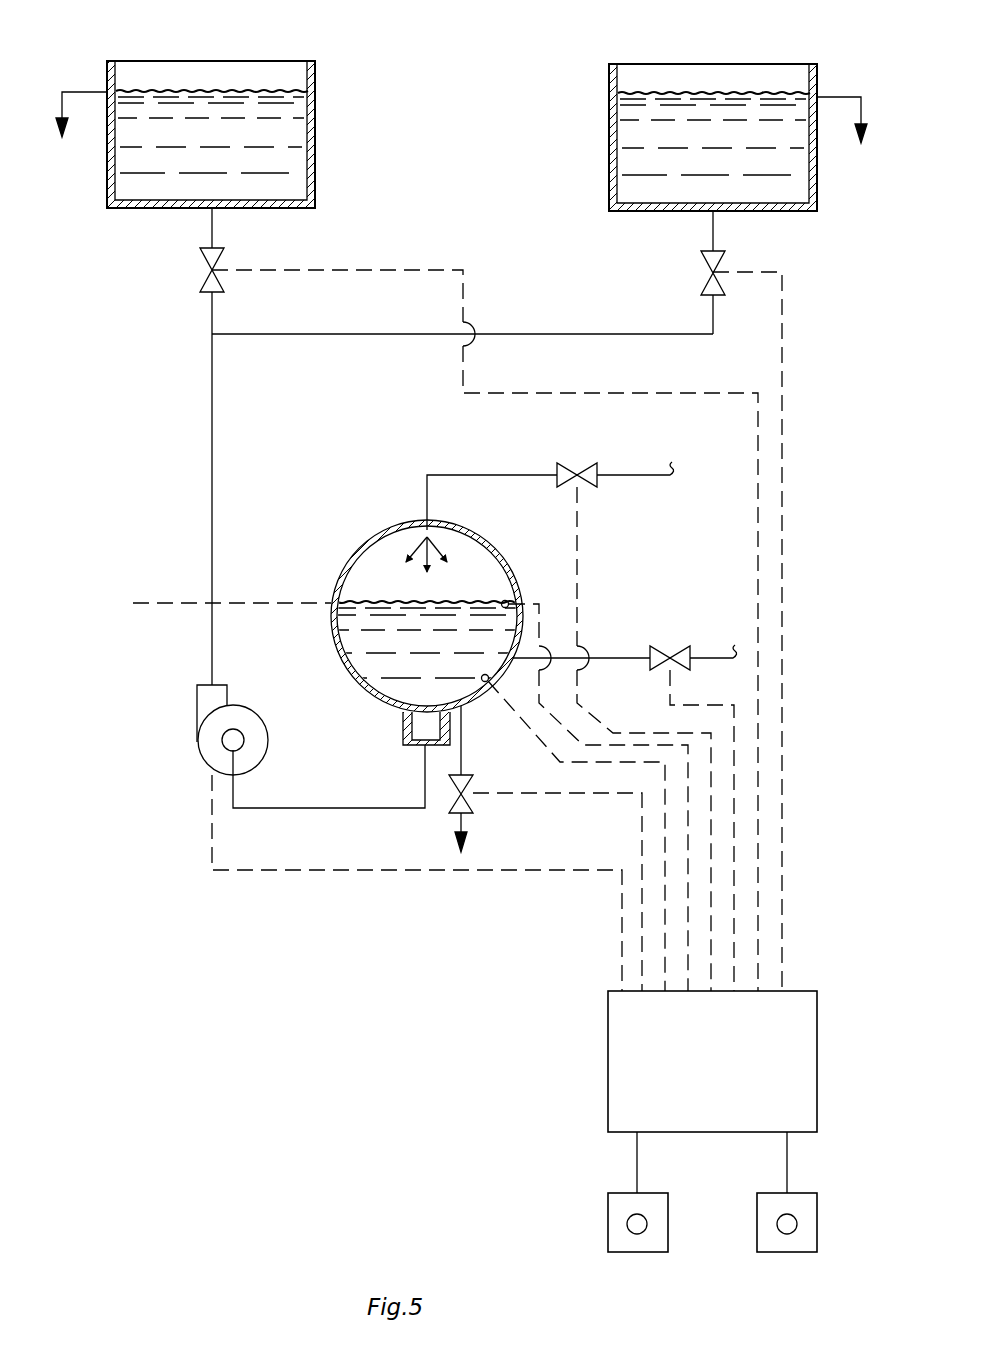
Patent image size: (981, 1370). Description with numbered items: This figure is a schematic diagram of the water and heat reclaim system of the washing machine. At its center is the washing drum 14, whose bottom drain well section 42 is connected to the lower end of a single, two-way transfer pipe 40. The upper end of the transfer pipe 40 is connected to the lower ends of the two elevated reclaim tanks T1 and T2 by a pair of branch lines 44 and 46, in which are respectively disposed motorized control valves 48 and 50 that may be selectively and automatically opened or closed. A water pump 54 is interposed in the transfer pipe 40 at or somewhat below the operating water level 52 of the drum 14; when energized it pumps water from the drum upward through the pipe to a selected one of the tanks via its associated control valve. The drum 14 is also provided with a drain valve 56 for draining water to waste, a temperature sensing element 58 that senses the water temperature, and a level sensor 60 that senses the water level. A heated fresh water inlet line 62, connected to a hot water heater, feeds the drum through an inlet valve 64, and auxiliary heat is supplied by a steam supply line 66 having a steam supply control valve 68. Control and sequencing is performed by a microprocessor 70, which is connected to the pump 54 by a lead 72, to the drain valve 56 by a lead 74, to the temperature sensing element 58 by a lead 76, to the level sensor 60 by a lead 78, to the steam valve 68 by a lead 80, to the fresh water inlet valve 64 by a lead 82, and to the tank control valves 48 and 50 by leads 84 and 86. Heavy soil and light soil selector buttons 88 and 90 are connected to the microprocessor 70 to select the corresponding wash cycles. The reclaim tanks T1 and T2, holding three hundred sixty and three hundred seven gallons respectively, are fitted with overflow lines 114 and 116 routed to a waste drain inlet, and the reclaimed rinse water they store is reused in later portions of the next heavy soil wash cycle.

The drum 14 is at (363, 542).
The two-way transfer pipe 40 is at (621, 334).
The bottom drain well section 42 is at (403, 735).
The branch line 44 is at (212, 316).
The branch line 46 is at (713, 316).
The motorized control valve 48 is at (200, 266).
The motorized control valve 50 is at (725, 268).
The operating water level 52 is at (301, 603).
The water pump 54 is at (197, 730).
The drain valve 56 is at (471, 800).
The temperature sensing element 58 is at (485, 678).
The level sensor 60 is at (503, 601).
The heated fresh water inlet line 62 is at (720, 658).
The inlet valve 64 is at (665, 646).
The steam supply line 66 is at (487, 475).
The steam supply control valve 68 is at (590, 463).
The microprocessor 70 is at (608, 1025).
The lead 72 is at (383, 870).
The lead 74 is at (642, 827).
The lead 76 is at (557, 751).
The lead 78 is at (545, 712).
The lead 80 is at (578, 591).
The lead 82 is at (737, 745).
The lead 84 is at (757, 535).
The lead 86 is at (782, 497).
The heavy soil selector button 88 is at (608, 1215).
The light soil selector button 90 is at (817, 1222).
The overflow line 114 is at (84, 92).
The overflow line 116 is at (833, 97).
The reclaim tank T1 is at (320, 112).
The reclaim tank T2 is at (607, 100).